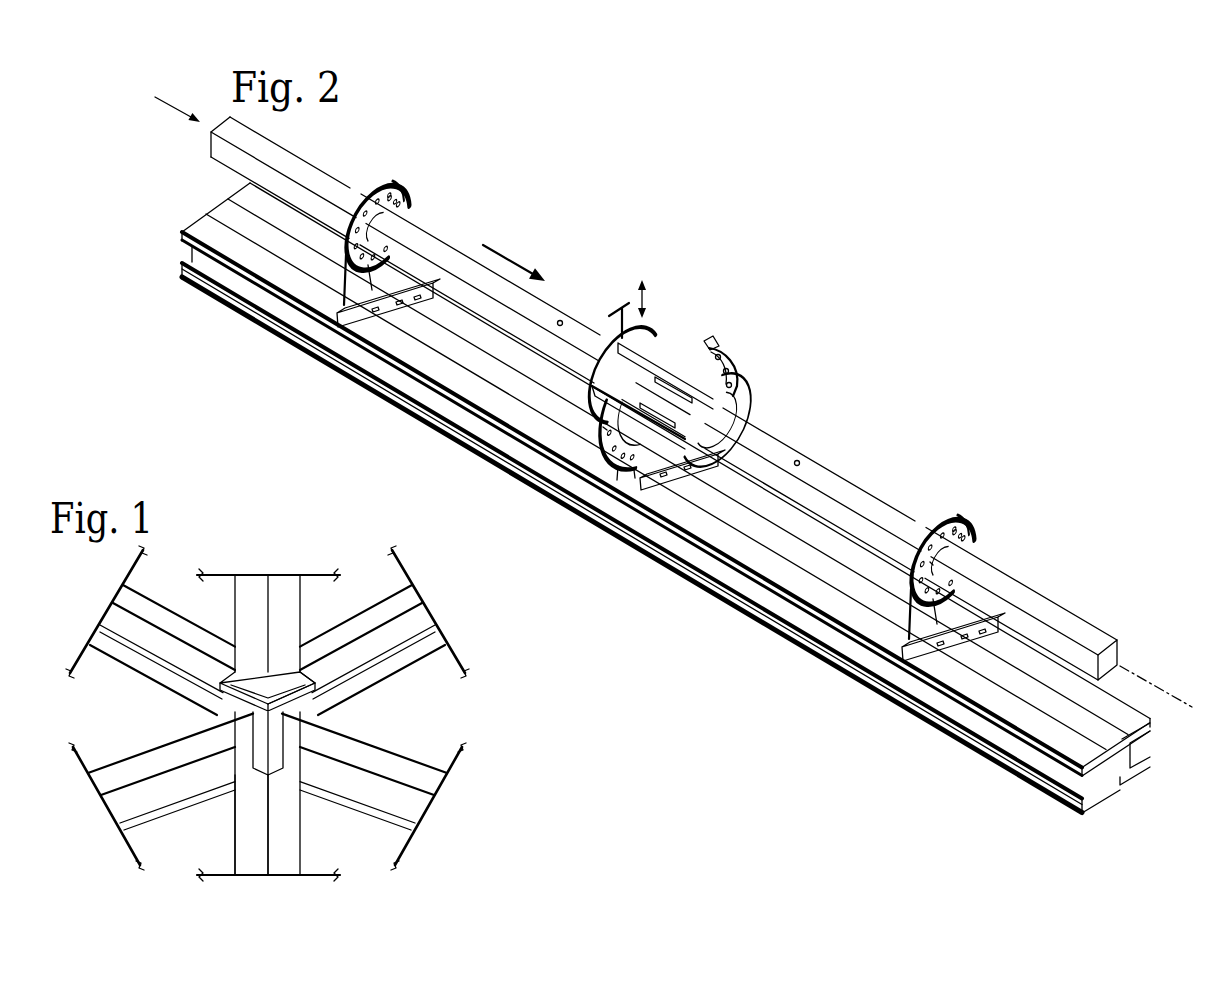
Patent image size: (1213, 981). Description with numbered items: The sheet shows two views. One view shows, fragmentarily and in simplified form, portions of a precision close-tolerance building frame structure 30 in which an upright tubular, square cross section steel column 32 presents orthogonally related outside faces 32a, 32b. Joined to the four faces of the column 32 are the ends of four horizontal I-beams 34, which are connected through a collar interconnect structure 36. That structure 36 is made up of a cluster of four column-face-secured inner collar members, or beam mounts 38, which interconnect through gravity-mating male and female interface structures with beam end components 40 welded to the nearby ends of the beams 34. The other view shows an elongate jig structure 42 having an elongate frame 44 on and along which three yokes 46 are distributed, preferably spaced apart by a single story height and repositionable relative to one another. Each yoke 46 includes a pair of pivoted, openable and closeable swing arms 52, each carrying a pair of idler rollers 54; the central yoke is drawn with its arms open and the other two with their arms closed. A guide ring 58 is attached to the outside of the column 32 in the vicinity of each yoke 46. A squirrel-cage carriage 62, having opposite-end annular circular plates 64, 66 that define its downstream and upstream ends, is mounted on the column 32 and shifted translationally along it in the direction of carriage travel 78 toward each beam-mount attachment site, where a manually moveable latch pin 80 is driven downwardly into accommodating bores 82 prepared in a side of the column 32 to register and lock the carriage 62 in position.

In FIG. 1, the frame structure 30 is at (293, 560).
In FIG. 2, the column 32 is at (222, 150).
In FIG. 1, the column 32 is at (232, 636).
In FIG. 2, the outside face of column 32a is at (1192, 656).
In FIG. 1, the outside face of column 32a is at (357, 861).
In FIG. 1, the outside face of column 32b is at (246, 862).
In FIG. 1, the I-beam 34 is at (147, 748).
In FIG. 1, the collar interconnect structure 36 is at (322, 681).
In FIG. 1, the beam mount 38 is at (281, 687).
In FIG. 1, the beam end component 40 is at (291, 748).
In FIG. 2, the jig structure 42 is at (957, 319).
In FIG. 2, the frame 44 is at (744, 624).
In FIG. 2, the yoke 46 is at (381, 169).
In FIG. 2, the swing arm 52 is at (408, 205).
In FIG. 2, the idler roller 54 is at (603, 428).
In FIG. 2, the guide ring 58 is at (404, 212).
In FIG. 2, the squirrel-cage carriage 62 is at (675, 337).
In FIG. 2, the circular plate 64 is at (743, 408).
In FIG. 2, the circular plate 66 is at (652, 333).
In FIG. 2, the direction of carriage travel 78 is at (516, 262).
In FIG. 2, the latch pin 80 is at (620, 309).
In FIG. 2, the bore 82 is at (561, 321).